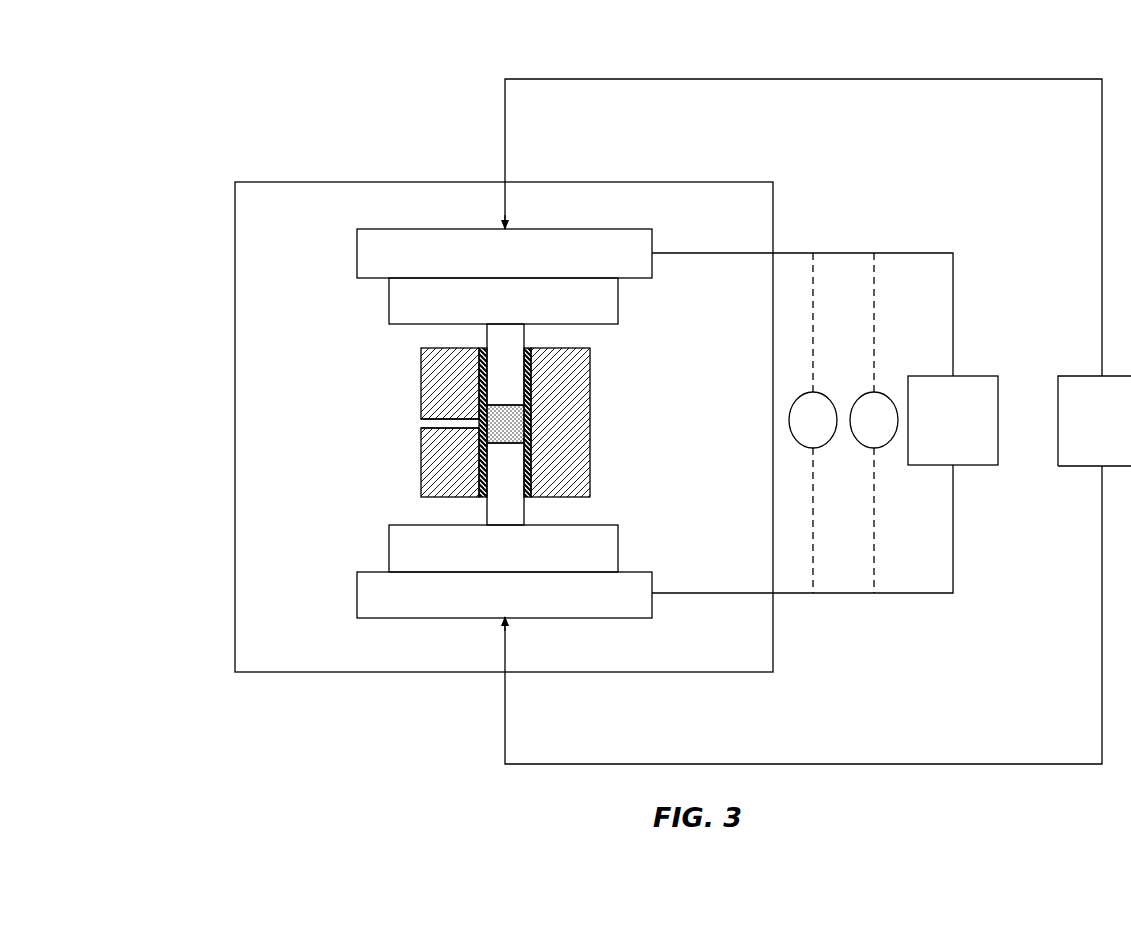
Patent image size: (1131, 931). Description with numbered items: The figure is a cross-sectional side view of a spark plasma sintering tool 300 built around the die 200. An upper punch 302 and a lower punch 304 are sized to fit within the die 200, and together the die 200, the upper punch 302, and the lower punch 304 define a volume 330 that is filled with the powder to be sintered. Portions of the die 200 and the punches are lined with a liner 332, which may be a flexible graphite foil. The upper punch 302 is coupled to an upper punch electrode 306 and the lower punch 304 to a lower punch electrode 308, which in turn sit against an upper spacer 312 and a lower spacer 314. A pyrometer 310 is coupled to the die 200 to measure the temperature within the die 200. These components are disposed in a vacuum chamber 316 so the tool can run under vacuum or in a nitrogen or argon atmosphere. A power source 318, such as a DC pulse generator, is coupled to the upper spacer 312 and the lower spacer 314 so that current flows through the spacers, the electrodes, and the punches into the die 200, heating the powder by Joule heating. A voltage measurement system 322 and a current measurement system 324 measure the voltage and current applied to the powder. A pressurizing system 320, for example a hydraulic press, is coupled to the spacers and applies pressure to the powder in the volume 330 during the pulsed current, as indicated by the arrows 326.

The spark plasma sintering tool 300 is at (288, 86).
The die 200 is at (440, 378).
The upper punch 302 is at (527, 335).
The lower punch 304 is at (528, 513).
The upper punch electrode 306 is at (603, 300).
The lower punch electrode 308 is at (612, 543).
The pyrometer 310 is at (421, 423).
The upper spacer 312 is at (370, 256).
The lower spacer 314 is at (377, 595).
The vacuum chamber 316 is at (235, 382).
The power source 318 is at (825, 423).
The pressurizing system 320 is at (1094, 421).
The voltage measurement system 322 is at (813, 423).
The current measurement system 324 is at (874, 423).
The arrows 326 is at (505, 148).
The volume 330 is at (522, 415).
The liner 332 is at (532, 372).